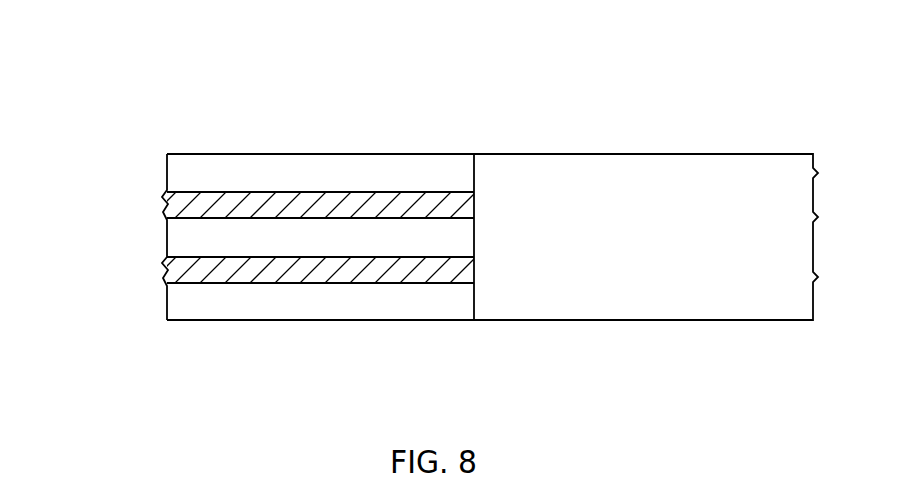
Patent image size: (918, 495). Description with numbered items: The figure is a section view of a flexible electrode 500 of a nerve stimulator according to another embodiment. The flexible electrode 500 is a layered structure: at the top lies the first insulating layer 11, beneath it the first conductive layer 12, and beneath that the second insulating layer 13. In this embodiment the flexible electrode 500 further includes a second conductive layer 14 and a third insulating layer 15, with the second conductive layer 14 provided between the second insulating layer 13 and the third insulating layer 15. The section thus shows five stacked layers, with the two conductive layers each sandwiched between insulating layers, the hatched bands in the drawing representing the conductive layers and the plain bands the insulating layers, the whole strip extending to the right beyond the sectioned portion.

The flexible electrode 500 is at (468, 133).
The first insulating layer 11 is at (330, 172).
The first conductive layer 12 is at (186, 200).
The second insulating layer 13 is at (188, 235).
The second conductive layer 14 is at (190, 272).
The third insulating layer 15 is at (290, 305).